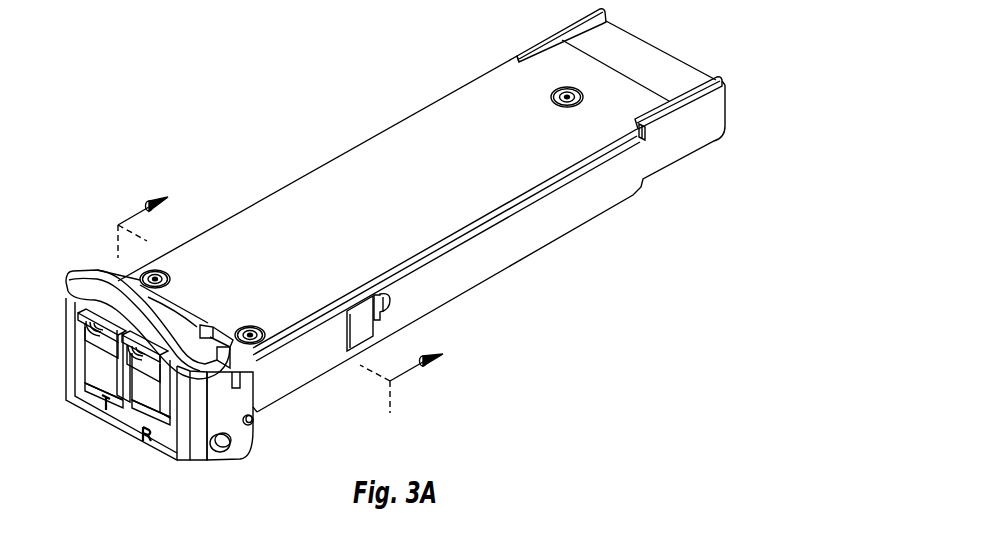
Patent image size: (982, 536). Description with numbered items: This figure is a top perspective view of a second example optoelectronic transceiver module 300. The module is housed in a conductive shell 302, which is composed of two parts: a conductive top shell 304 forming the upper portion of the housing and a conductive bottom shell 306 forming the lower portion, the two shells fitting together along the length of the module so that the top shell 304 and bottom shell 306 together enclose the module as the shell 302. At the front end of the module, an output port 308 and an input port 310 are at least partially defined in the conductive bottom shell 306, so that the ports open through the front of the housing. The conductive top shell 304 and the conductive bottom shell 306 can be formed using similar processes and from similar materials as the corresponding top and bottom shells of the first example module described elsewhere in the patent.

The optoelectronic transceiver module 300 is at (173, 66).
The conductive shell 302 is at (718, 184).
The conductive top shell 304 is at (597, 133).
The conductive bottom shell 306 is at (600, 190).
The output port 308 is at (118, 378).
The input port 310 is at (160, 403).